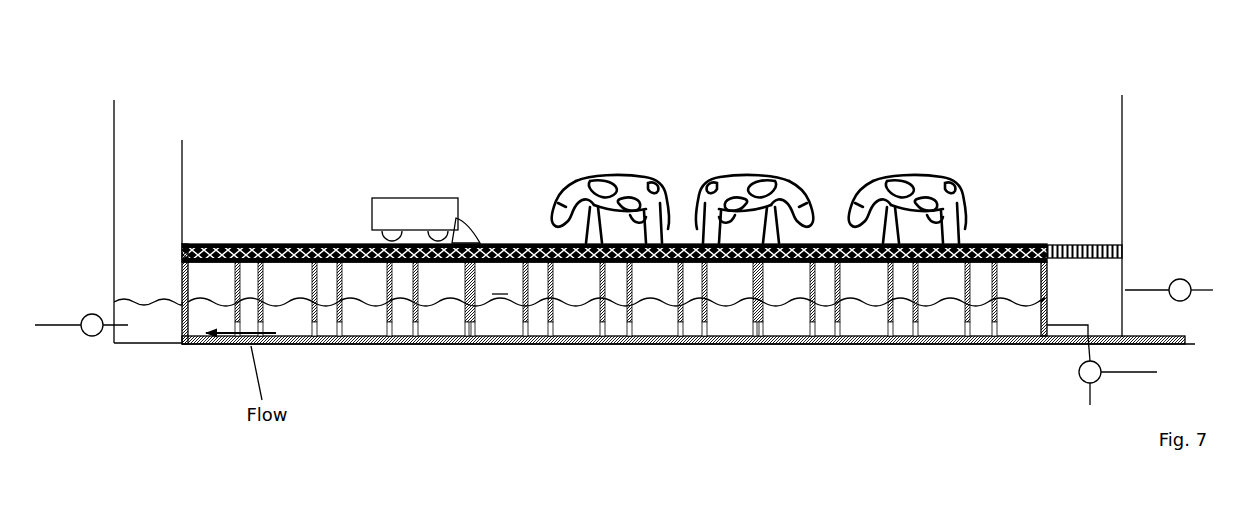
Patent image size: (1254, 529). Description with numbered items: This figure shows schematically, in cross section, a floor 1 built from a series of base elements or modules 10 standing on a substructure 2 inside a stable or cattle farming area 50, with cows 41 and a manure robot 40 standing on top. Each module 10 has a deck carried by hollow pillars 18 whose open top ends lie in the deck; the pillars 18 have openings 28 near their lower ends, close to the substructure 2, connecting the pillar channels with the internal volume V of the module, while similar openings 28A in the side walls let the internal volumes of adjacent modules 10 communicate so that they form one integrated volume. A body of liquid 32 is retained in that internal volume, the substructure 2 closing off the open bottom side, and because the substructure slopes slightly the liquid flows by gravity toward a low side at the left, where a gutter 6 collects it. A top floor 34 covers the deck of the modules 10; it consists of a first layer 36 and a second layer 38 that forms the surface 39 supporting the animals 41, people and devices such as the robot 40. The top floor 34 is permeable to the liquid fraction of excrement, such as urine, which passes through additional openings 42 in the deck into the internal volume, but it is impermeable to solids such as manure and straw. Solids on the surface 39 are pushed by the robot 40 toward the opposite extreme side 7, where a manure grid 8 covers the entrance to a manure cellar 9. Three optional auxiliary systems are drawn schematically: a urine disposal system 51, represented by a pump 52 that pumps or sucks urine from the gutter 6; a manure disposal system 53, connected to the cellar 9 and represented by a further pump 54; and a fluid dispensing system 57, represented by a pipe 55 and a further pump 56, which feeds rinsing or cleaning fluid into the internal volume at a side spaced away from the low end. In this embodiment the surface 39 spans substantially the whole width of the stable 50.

The floor 1 is at (330, 213).
The substructure 2 is at (1185, 338).
The gutter 6 is at (145, 334).
The side 7 is at (1043, 235).
The manure grid 8 is at (1085, 246).
The manure cellar 9 is at (1071, 319).
The base element 10 is at (496, 328).
The pillars 18 is at (535, 292).
The opening 28 is at (552, 338).
The openings 28A is at (755, 340).
The body of liquid 32 is at (657, 325).
The top floor 34 is at (176, 243).
The first layer 36 is at (210, 244).
The second layer 38 is at (240, 244).
The surface 39 is at (273, 243).
The manure robot 40 is at (409, 190).
The animals 41 is at (622, 178).
The additional openings 42 is at (463, 230).
The cattle farming area 50 is at (535, 77).
The urine disposal system 51 is at (119, 361).
The pump 52 is at (90, 338).
The manure disposal system 53 is at (1181, 258).
The further pump 54 is at (1180, 290).
The pipe 55 is at (1079, 362).
The further pump 56 is at (1133, 372).
The fluid dispensing system 57 is at (1030, 383).